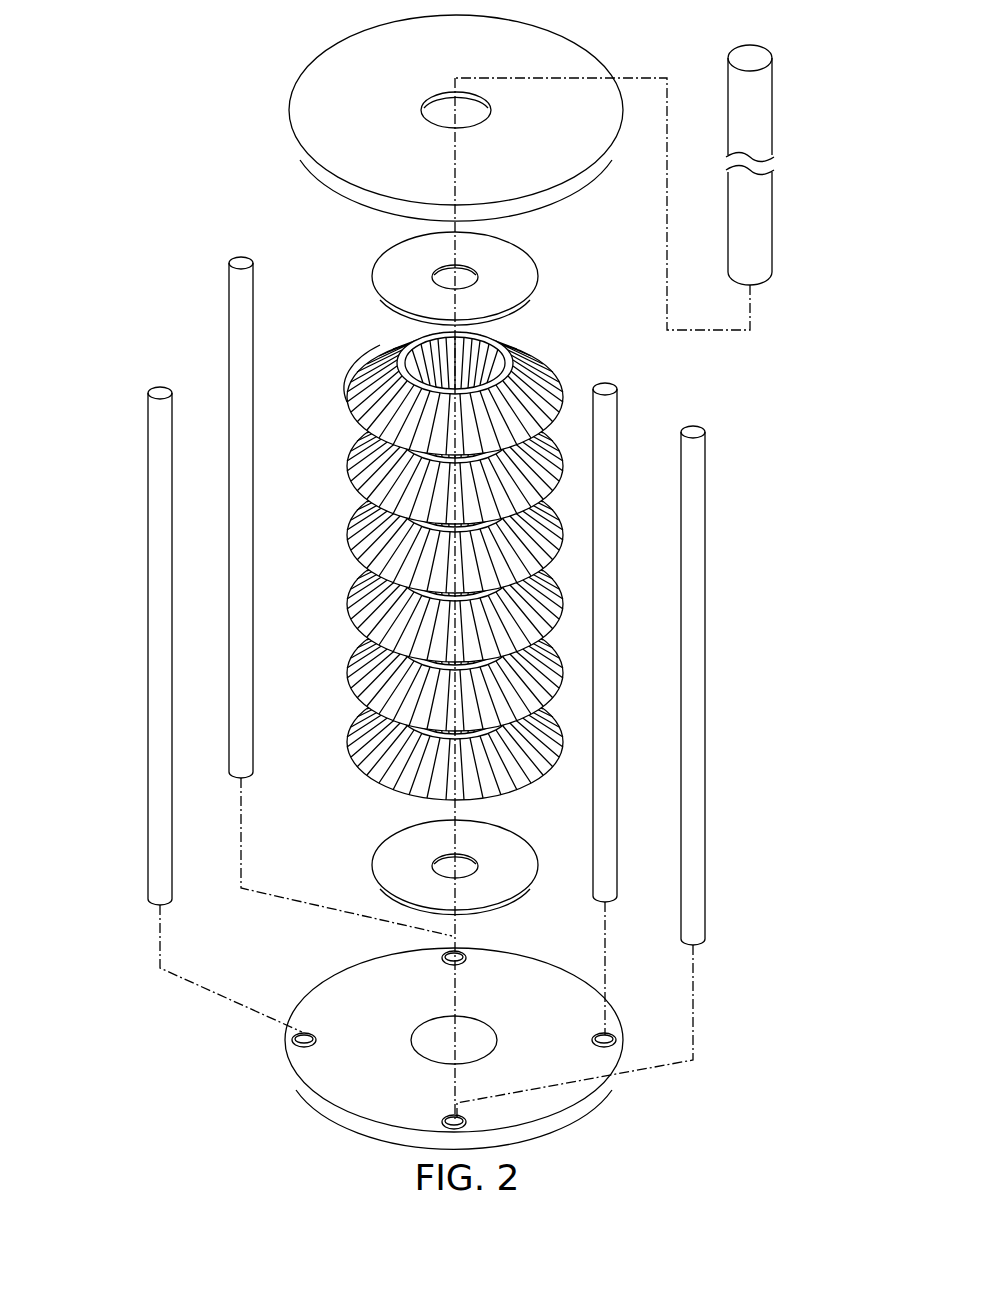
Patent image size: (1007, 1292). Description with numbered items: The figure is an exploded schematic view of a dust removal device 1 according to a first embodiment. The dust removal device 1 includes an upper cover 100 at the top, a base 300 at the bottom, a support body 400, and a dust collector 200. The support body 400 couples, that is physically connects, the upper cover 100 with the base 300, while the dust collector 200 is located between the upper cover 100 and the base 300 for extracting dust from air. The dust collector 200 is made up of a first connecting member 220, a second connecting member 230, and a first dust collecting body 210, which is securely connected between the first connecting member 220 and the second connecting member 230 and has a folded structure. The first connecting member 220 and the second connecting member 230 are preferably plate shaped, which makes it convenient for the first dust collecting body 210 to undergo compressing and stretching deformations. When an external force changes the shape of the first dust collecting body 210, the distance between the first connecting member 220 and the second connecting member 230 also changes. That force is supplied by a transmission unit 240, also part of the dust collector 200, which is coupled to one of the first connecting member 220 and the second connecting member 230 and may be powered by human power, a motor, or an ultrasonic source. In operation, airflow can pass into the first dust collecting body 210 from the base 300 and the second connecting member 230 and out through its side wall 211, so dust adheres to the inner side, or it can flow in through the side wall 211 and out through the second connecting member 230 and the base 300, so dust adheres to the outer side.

The dust removal device 1 is at (262, 215).
The upper cover 100 is at (310, 88).
The dust collector 200 is at (446, 540).
The first dust collecting body 210 is at (397, 341).
The side wall 211 is at (352, 379).
The first connecting member 220 is at (520, 254).
The second connecting member 230 is at (383, 856).
The transmission unit 240 is at (760, 110).
The base 300 is at (324, 1007).
The support body 400 is at (158, 390).